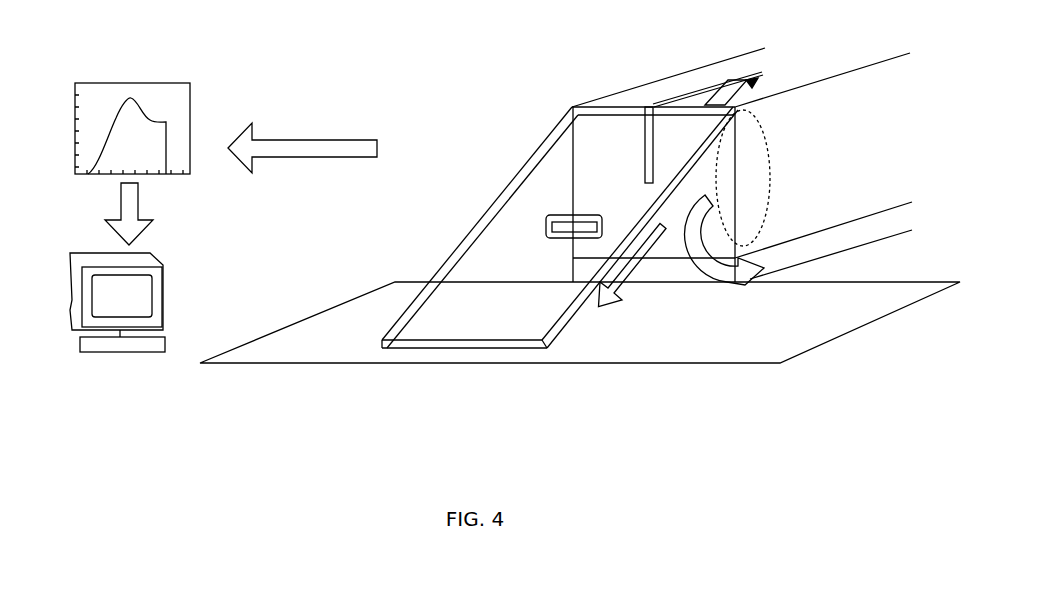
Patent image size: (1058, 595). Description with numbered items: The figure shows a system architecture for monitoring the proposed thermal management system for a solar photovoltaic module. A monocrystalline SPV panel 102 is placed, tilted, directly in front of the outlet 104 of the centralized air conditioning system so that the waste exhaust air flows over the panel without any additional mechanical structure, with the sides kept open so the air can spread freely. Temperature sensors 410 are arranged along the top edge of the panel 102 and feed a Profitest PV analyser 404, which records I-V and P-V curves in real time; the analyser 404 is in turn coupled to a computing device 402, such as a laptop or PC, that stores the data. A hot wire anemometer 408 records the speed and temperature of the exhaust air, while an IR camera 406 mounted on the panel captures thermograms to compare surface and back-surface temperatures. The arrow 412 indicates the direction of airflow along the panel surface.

The monocrystalline SPV panel 102 is at (560, 198).
The outlet 104 is at (775, 197).
The computing device 402 is at (117, 302).
The Profitest PV analyser 404 is at (148, 81).
The IR camera 406 is at (520, 192).
The hot wire anemometer 408 is at (596, 113).
The temperature sensors 410 is at (757, 75).
The sliding direction arrow 412 is at (686, 317).